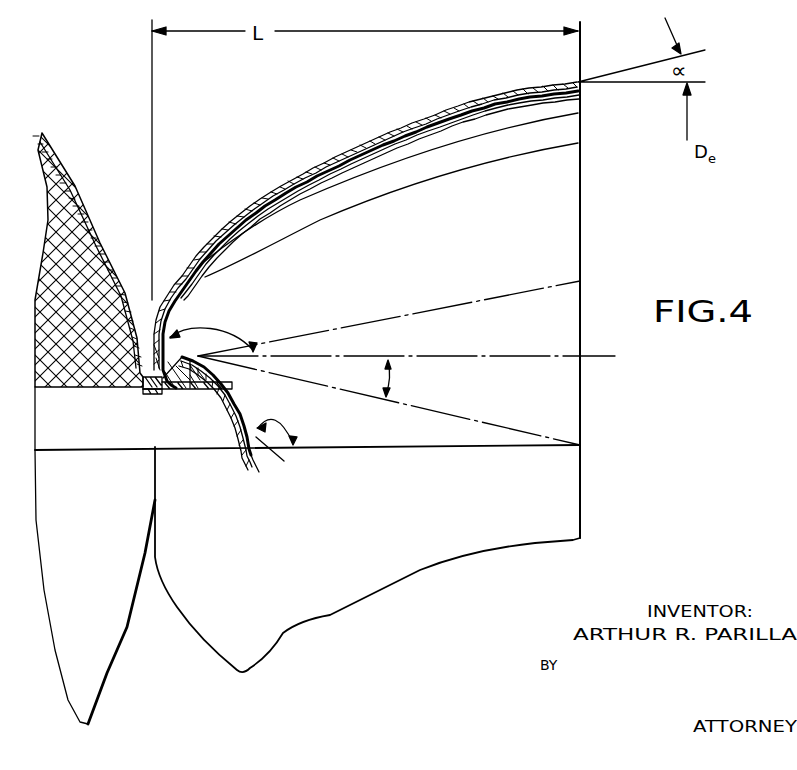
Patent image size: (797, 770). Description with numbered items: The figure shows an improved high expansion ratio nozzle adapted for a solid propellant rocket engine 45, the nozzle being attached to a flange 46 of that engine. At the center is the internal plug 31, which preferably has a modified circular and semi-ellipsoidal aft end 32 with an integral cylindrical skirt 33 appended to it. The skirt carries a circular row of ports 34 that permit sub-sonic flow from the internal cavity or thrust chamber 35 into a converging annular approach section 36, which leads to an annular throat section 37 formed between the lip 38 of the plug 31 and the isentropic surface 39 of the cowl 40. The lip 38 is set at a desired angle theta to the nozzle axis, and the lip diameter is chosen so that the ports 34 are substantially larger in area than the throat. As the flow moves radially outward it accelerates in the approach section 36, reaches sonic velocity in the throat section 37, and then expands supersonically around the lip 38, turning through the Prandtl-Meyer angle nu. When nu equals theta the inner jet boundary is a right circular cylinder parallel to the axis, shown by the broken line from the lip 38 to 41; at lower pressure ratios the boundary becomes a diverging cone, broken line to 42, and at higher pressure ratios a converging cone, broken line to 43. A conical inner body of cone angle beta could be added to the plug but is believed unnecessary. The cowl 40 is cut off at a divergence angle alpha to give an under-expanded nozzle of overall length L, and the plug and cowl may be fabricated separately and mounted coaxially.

The internal plug 31 is at (261, 450).
The aft end 32 is at (231, 405).
The cylindrical skirt 33 is at (150, 392).
The ports 34 is at (163, 391).
The thrust chamber 35 is at (165, 428).
The converging annular approach section 36 is at (186, 362).
The annular throat section 37 is at (186, 387).
The lip 38 is at (179, 342).
The isentropic surface 39 is at (304, 183).
The cowl 40 is at (243, 212).
The broken line 38–41 (design-condition jet boundary) 41 is at (419, 371).
The broken line 38–42 (diverging jet boundary) 42 is at (580, 281).
The broken line 38–43 (converging jet boundary) 43 is at (404, 406).
The solid propellant rocket engine 45 is at (77, 183).
The flange 46 is at (133, 386).